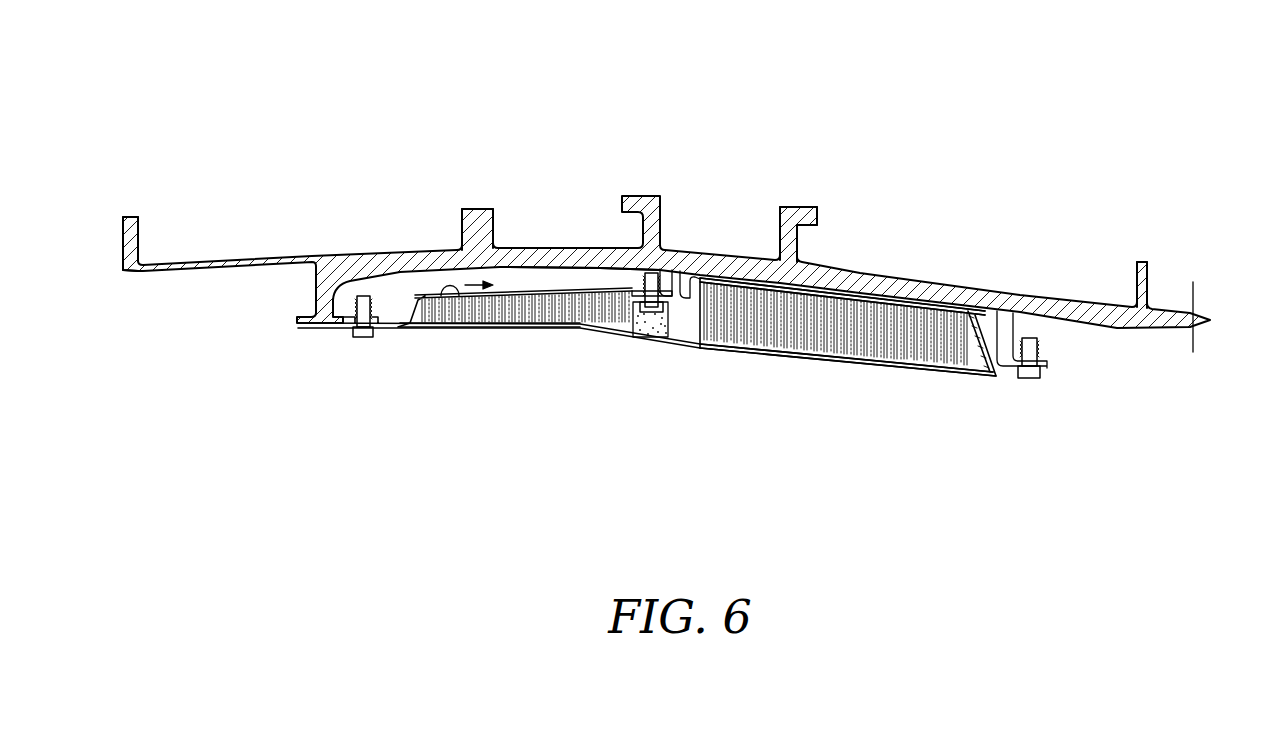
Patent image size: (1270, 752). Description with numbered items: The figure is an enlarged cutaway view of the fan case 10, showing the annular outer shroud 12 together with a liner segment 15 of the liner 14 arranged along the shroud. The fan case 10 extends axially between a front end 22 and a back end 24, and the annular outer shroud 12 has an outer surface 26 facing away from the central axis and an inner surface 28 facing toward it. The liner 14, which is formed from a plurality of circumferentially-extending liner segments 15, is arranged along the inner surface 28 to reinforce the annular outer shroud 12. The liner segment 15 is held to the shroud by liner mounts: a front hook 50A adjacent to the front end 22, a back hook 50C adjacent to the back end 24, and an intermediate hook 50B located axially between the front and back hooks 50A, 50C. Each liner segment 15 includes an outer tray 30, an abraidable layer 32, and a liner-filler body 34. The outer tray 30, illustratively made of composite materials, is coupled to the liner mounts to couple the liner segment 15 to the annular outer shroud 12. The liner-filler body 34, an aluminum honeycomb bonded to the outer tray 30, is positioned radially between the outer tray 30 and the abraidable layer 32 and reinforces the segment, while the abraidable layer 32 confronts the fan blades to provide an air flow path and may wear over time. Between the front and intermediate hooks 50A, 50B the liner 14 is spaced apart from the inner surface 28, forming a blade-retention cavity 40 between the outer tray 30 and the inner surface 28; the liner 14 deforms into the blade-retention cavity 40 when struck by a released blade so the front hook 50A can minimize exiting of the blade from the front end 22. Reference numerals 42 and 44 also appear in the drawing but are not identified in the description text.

The fan case 10 is at (716, 148).
The annular outer shroud 12 is at (802, 190).
The liner 14 is at (292, 372).
The liner segment 15 is at (863, 450).
The front end 22 is at (100, 216).
The back end 24 is at (1200, 290).
The outer surface 26 is at (530, 247).
The inner surface 28 is at (581, 268).
The outer tray 30 is at (772, 292).
The abraidable layer 32 is at (855, 362).
The liner-filler body 34 is at (830, 332).
The blade-retention cavity 40 is at (493, 300).
The back skin 42 is at (543, 328).
The seal 44 is at (450, 292).
The front hook 50A is at (341, 327).
The intermediate hook 50B is at (676, 300).
The back hook 50C is at (1045, 357).